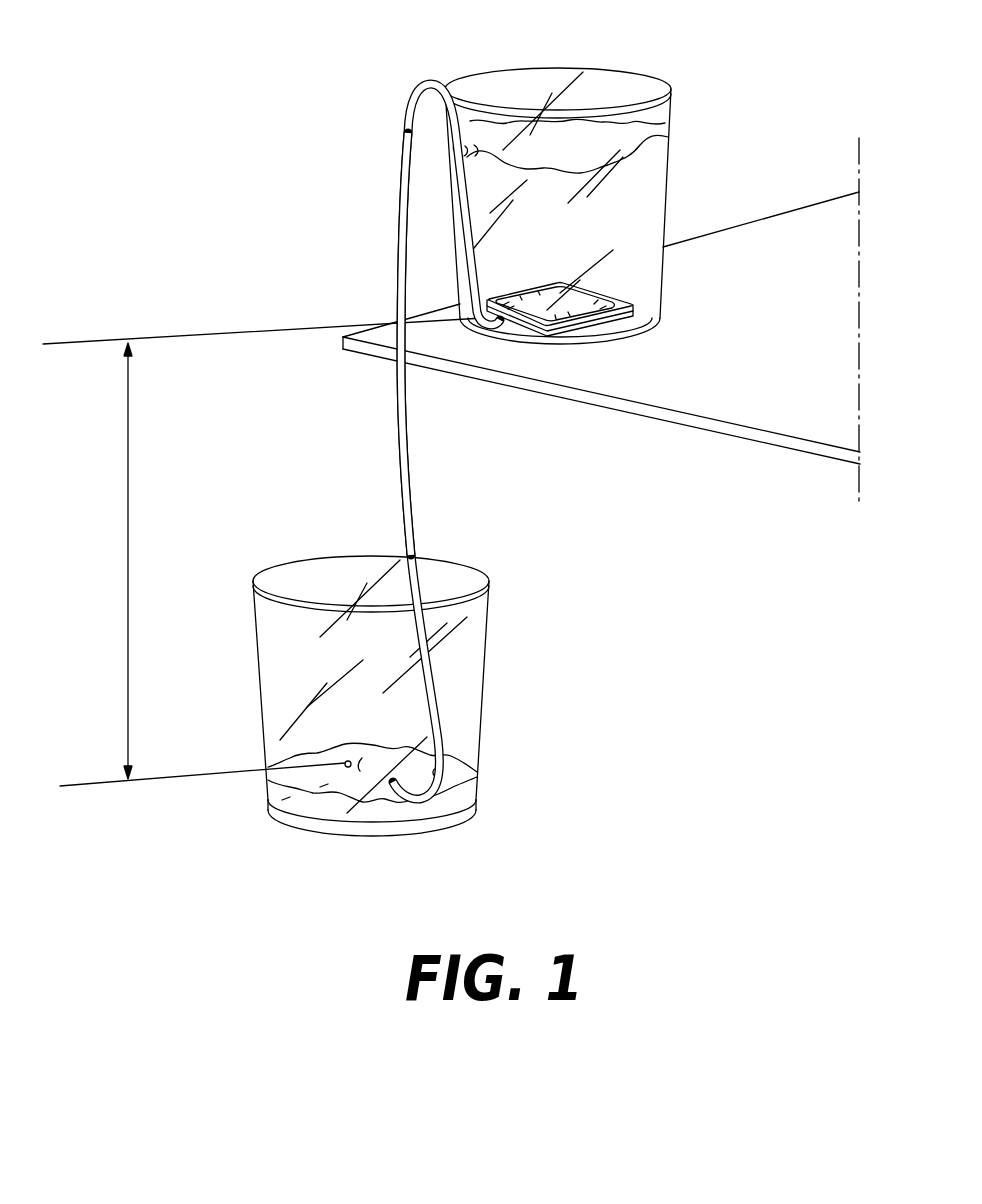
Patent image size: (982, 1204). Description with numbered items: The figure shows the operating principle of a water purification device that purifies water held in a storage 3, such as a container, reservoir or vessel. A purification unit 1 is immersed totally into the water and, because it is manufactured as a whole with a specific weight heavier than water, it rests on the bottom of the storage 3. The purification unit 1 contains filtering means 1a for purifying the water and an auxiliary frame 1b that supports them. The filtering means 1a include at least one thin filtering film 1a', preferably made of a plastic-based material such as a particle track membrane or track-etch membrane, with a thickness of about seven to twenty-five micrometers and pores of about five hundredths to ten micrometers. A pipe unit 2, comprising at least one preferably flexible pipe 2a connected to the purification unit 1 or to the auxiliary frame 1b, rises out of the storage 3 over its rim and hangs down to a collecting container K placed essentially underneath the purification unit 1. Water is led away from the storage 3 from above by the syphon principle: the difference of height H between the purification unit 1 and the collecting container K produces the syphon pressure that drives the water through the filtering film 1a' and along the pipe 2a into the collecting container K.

The purification unit 1 is at (598, 278).
The filtering means 1a is at (564, 377).
The auxiliary frame 1b is at (583, 328).
The filtering film 1a' is at (600, 327).
The pipe unit 2 is at (376, 451).
The flexible pipe 2a is at (408, 479).
The storage 3 is at (729, 135).
The collecting container K is at (506, 707).
The difference of height H is at (130, 548).